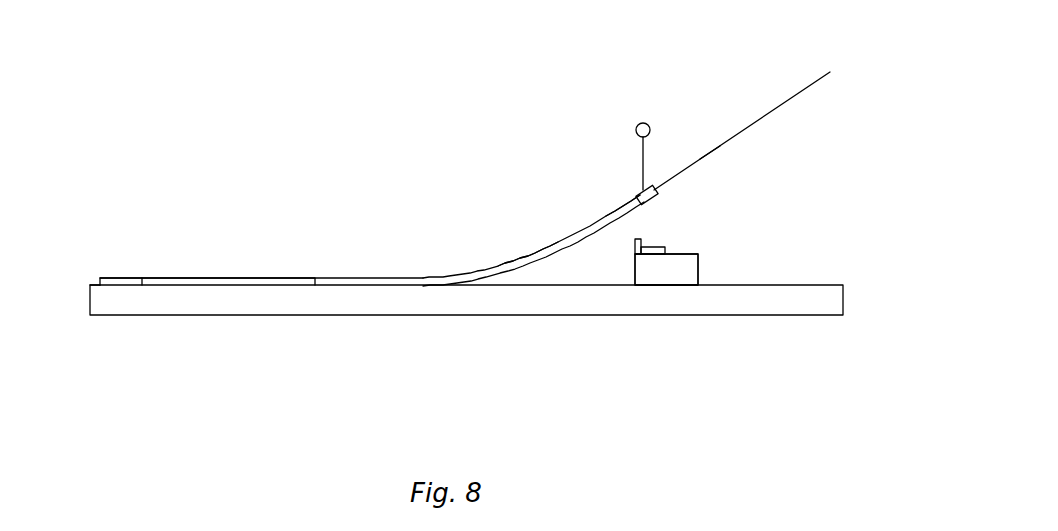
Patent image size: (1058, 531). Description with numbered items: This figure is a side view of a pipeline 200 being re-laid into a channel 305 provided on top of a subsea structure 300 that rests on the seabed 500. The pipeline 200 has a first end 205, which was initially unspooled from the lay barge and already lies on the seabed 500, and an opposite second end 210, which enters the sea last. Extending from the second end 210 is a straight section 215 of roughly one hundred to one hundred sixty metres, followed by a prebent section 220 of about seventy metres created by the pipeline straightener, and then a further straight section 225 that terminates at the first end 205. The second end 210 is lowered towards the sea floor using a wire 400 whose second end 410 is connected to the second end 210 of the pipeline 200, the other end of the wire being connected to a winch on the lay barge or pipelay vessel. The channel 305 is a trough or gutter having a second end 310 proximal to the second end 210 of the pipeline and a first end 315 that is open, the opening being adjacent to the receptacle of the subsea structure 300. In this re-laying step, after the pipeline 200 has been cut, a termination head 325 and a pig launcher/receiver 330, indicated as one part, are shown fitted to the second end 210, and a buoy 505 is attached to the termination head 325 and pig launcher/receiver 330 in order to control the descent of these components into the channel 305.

The pipeline 200 is at (375, 279).
The first end 205 is at (97, 279).
The second end 210 is at (637, 195).
The straight section 215 is at (525, 259).
The prebent section 220 is at (222, 283).
The further straight section 225 is at (120, 278).
The subsea structure 300 is at (673, 286).
The channel 305 is at (665, 247).
The second end of channel 310 is at (700, 255).
The first end of channel 315 is at (635, 248).
The termination head 325 is at (639, 192).
The pig launcher/receiver 330 is at (641, 190).
The wire 400 is at (752, 127).
The second end of wire 410 is at (690, 168).
The seabed 500 is at (423, 302).
The buoy 505 is at (641, 123).